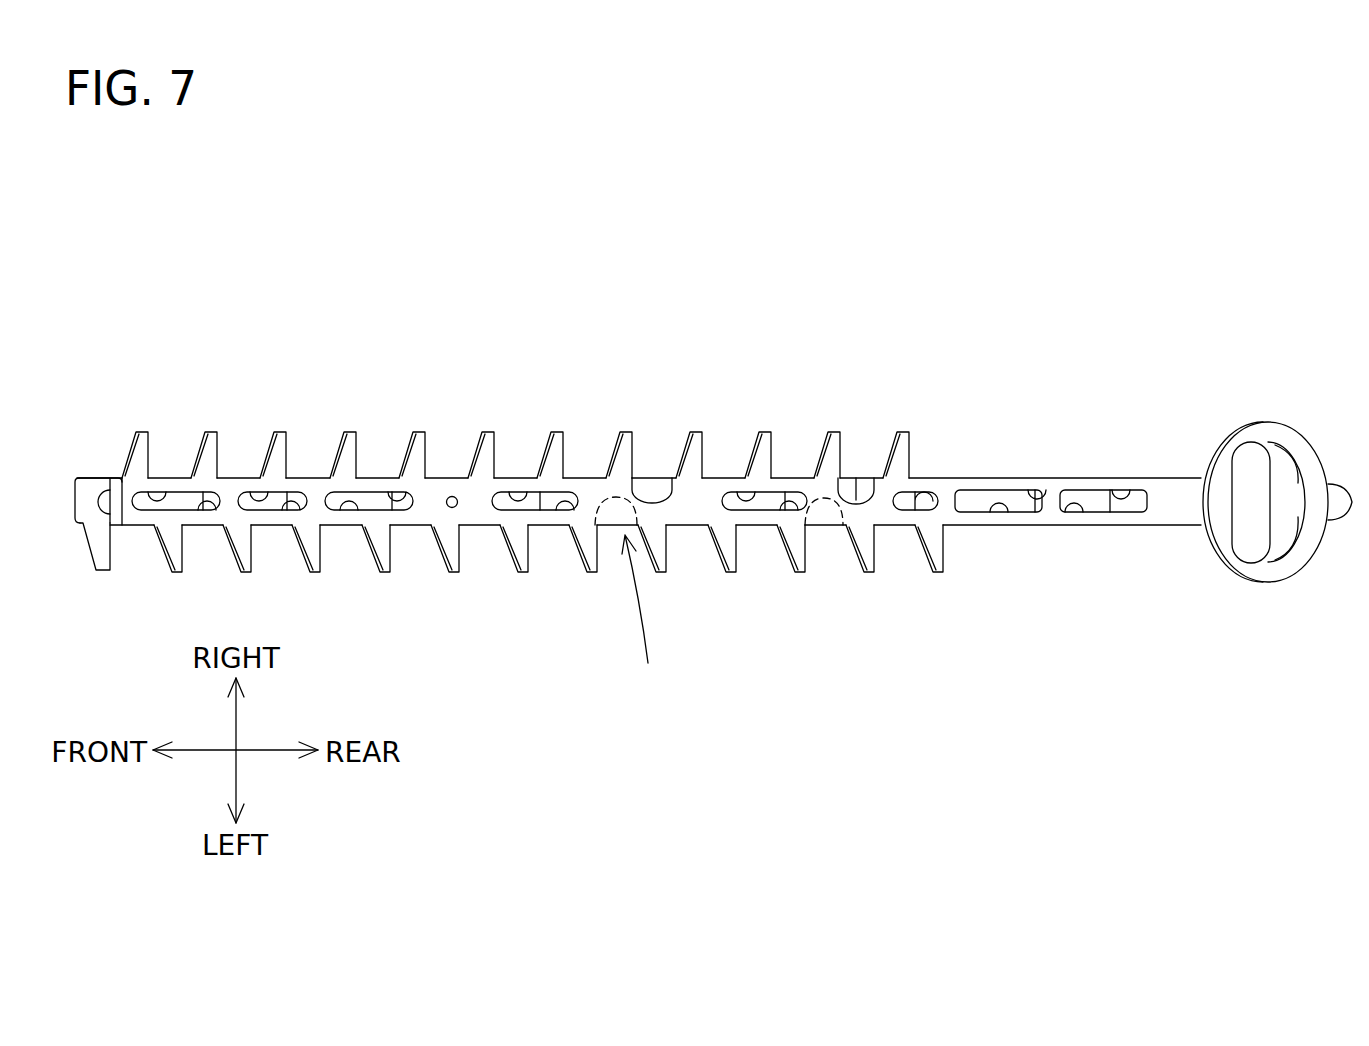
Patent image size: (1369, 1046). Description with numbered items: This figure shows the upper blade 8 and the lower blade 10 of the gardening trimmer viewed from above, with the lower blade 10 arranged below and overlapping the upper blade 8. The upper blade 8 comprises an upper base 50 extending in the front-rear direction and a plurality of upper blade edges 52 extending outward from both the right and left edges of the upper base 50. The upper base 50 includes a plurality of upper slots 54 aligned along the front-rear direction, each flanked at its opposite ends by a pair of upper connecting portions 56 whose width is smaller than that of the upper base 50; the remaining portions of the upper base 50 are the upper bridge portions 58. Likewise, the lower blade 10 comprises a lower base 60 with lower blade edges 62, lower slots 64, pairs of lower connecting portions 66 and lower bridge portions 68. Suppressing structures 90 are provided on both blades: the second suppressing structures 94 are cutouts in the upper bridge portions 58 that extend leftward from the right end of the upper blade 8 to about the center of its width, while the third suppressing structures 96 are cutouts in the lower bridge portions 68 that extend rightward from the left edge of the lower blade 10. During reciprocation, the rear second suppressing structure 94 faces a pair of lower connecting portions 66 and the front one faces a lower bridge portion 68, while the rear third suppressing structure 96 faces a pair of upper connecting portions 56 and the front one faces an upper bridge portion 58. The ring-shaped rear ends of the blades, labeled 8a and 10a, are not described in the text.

The upper blade 8 is at (1168, 478).
The projection of second blade 8a is at (1293, 478).
The lower blade 10 is at (1217, 435).
The through hole 10a is at (1253, 513).
The upper base 50 is at (1168, 525).
The upper blade edges 52 is at (133, 463).
The upper slots 54 is at (150, 495).
The upper connecting portions 56 is at (762, 488).
The upper bridge portions 58 is at (698, 502).
The lower base 60 is at (88, 487).
The lower blade edges 62 is at (92, 550).
The lower slots 64 is at (103, 510).
The lower connecting portions 66 is at (868, 492).
The lower bridge portions 68 is at (80, 500).
The suppressing structures 90 is at (643, 615).
The second suppressing structures 94 is at (643, 495).
The third suppressing structures 96 is at (617, 498).